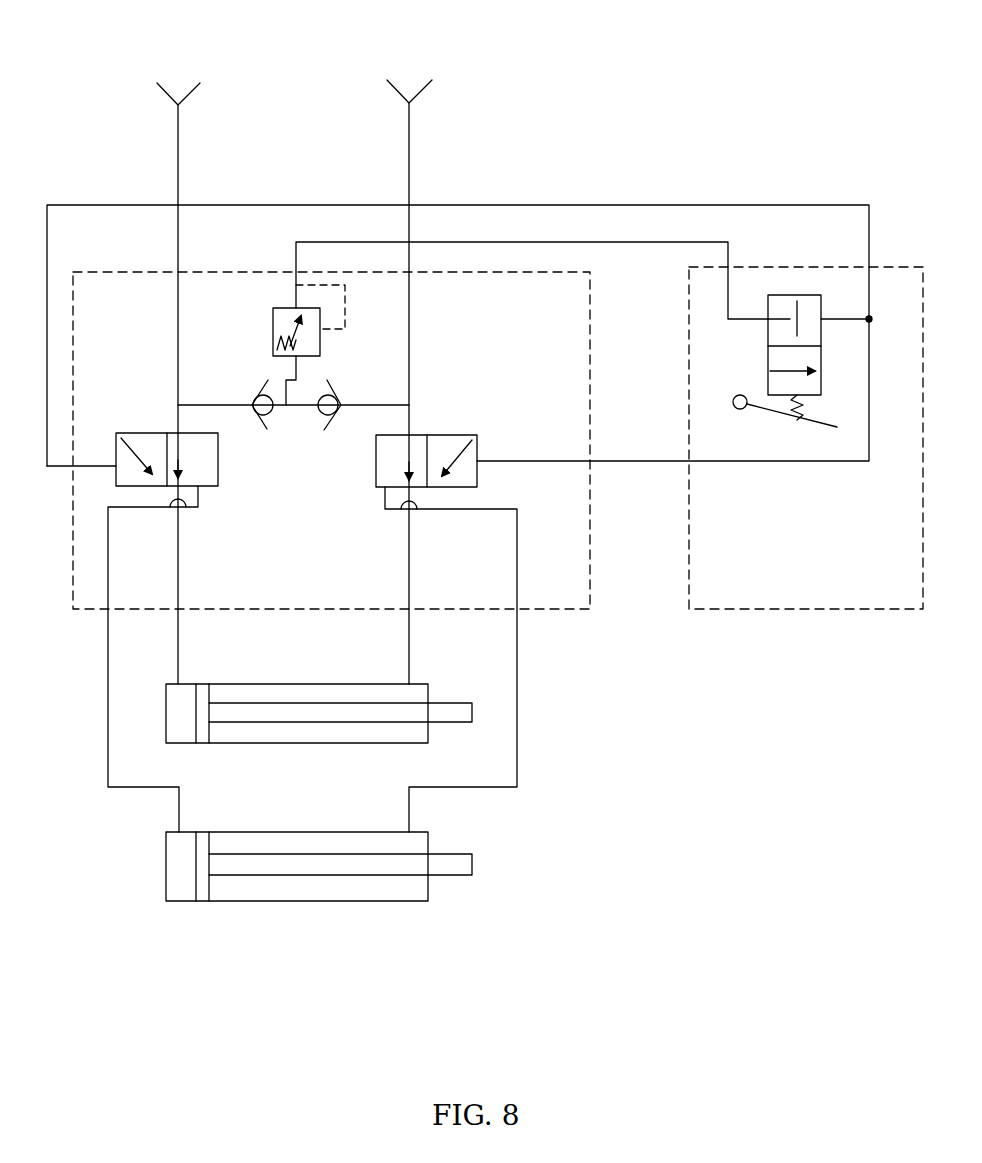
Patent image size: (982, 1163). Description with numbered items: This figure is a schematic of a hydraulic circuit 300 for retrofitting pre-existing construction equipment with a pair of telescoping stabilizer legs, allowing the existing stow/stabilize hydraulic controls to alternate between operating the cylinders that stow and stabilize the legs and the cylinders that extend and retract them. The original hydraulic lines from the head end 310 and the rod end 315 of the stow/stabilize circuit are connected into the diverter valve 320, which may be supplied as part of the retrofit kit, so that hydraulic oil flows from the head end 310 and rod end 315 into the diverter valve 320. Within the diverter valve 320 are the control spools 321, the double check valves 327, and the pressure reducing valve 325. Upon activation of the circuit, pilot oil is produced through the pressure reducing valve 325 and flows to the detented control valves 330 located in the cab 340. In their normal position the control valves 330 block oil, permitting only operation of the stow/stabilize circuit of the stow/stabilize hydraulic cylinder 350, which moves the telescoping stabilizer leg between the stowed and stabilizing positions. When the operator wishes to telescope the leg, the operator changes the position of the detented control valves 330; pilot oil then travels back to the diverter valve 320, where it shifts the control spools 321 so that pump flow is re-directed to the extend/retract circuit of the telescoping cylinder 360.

The hydraulic circuit 300 is at (531, 104).
The head end 310 is at (186, 90).
The rod end 315 is at (416, 92).
The diverter valve 320 is at (72, 575).
The control spools 321 is at (153, 432).
The pressure reducing valve 325 is at (322, 357).
The double check valves 327 is at (264, 410).
The control valves 330 is at (725, 343).
The cab 340 is at (797, 612).
The stow/stabilize hydraulic cylinder 350 is at (166, 713).
The telescoping cylinder 360 is at (166, 862).